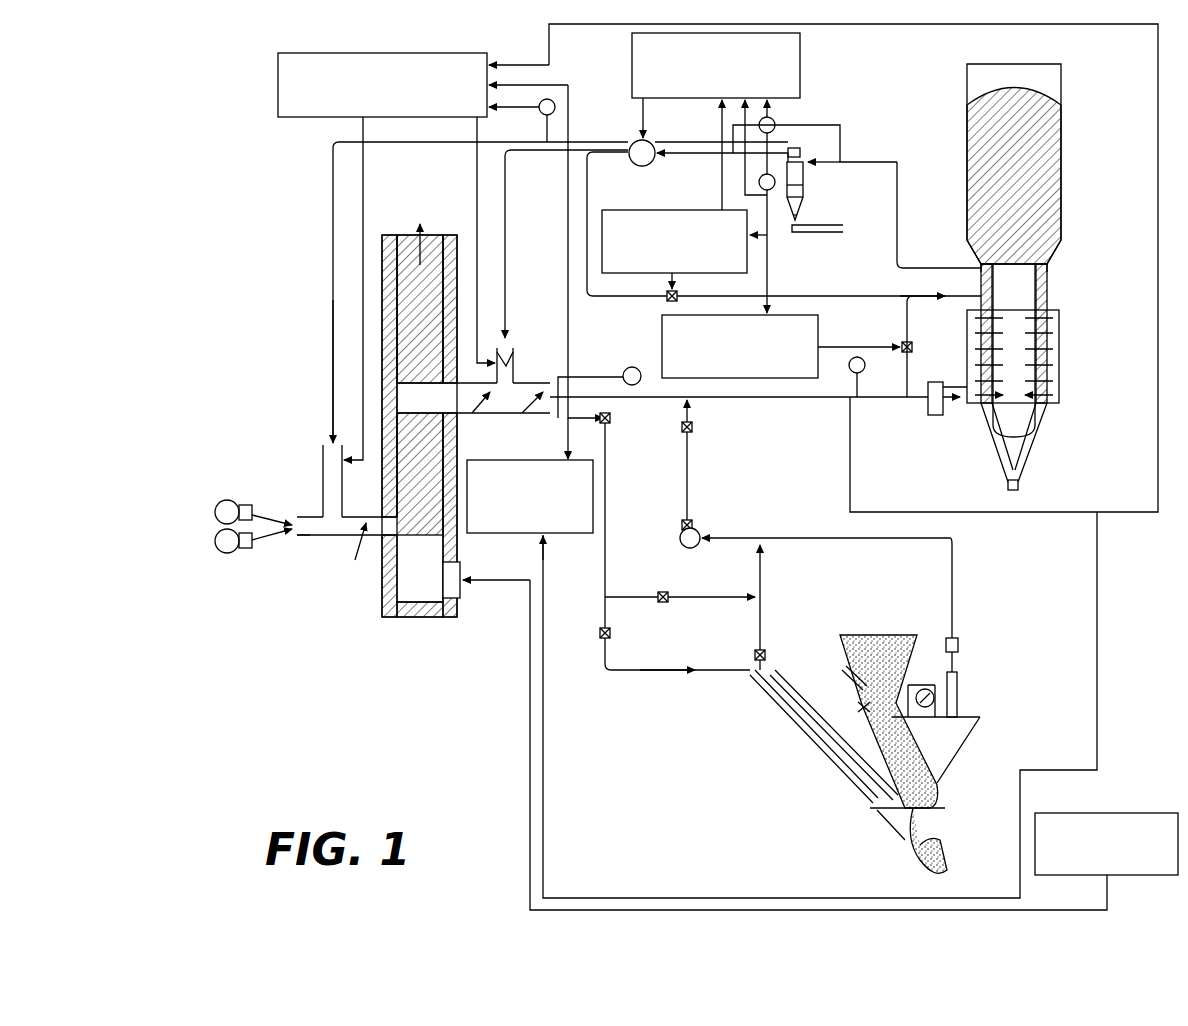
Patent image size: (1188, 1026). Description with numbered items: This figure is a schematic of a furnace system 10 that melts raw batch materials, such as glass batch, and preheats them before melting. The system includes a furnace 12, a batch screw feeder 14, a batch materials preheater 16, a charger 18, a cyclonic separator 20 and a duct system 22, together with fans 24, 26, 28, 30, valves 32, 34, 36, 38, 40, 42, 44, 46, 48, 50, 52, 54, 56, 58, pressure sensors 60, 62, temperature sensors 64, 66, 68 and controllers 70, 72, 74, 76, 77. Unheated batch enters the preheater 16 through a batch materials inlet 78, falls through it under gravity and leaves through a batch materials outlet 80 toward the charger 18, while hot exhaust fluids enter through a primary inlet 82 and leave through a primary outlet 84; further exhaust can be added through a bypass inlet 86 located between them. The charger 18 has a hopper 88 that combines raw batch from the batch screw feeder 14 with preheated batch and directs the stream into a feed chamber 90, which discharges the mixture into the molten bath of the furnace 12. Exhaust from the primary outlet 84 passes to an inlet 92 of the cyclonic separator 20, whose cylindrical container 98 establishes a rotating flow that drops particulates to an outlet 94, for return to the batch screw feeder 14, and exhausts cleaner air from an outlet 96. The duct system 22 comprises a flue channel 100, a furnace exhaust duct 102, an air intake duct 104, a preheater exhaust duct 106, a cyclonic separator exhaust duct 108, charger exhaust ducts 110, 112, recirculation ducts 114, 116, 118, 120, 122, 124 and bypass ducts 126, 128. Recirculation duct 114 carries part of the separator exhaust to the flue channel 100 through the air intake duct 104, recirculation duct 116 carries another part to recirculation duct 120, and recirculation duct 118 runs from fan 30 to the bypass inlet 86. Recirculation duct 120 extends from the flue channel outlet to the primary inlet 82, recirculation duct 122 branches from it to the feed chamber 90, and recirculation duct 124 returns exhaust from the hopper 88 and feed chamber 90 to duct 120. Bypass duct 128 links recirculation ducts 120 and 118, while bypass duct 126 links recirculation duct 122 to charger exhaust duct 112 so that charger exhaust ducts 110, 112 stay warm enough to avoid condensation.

The furnace system 10 is at (302, 172).
The furnace 12 is at (1138, 815).
The batch screw feeder 14 is at (938, 700).
The batch materials preheater 16 is at (1045, 300).
The charger 18 is at (895, 843).
The cyclonic separator 20 is at (802, 219).
The duct system 22 is at (312, 247).
The fan 24 is at (218, 505).
The fan 26 is at (217, 551).
The fan 28 is at (683, 548).
The fan 30 is at (640, 140).
The valve 32 is at (302, 520).
The valve 34 is at (322, 464).
The valve 36 is at (357, 562).
The valve 38 is at (478, 415).
The valve 40 is at (514, 366).
The valve 42 is at (537, 418).
The valve 44 is at (612, 421).
The valve 46 is at (600, 640).
The valve 48 is at (665, 603).
The valve 50 is at (960, 645).
The valve 52 is at (768, 652).
The valve 54 is at (693, 428).
The valve 56 is at (668, 298).
The valve 58 is at (900, 340).
The pressure sensor 60 is at (775, 125).
The pressure sensor 62 is at (541, 113).
The temperature sensor 64 is at (770, 190).
The temperature sensor 66 is at (626, 370).
The temperature sensor 68 is at (862, 372).
The controller 70 is at (800, 57).
The controller 72 is at (672, 210).
The controller 74 is at (818, 345).
The controller 76 is at (278, 72).
The controller 77 is at (470, 535).
The batch materials inlet 78 is at (1046, 73).
The batch materials outlet 80 is at (1020, 487).
The primary inlet 82 is at (968, 400).
The primary outlet 84 is at (975, 268).
The bypass inlet 86 is at (980, 300).
The hopper 88 is at (958, 740).
The feed chamber 90 is at (945, 855).
The inlet 92 is at (803, 160).
The outlet 94 is at (810, 233).
The outlet 96 is at (818, 150).
The cylindrical container 98 is at (803, 180).
The flue channel 100 is at (407, 600).
The furnace exhaust duct 102 is at (526, 640).
The air intake duct 104 is at (314, 540).
The preheater exhaust duct 106 is at (898, 190).
The cyclonic separator exhaust duct 108 is at (704, 153).
The charger exhaust duct 110 is at (960, 583).
The charger exhaust duct 112 is at (765, 590).
The recirculation duct 114 is at (328, 312).
The recirculation duct 116 is at (505, 203).
The recirculation duct 118 is at (587, 255).
The recirculation duct 120 is at (775, 400).
The recirculation duct 122 is at (600, 572).
The recirculation duct 124 is at (692, 512).
The bypass duct 126 is at (700, 597).
The bypass duct 128 is at (908, 364).